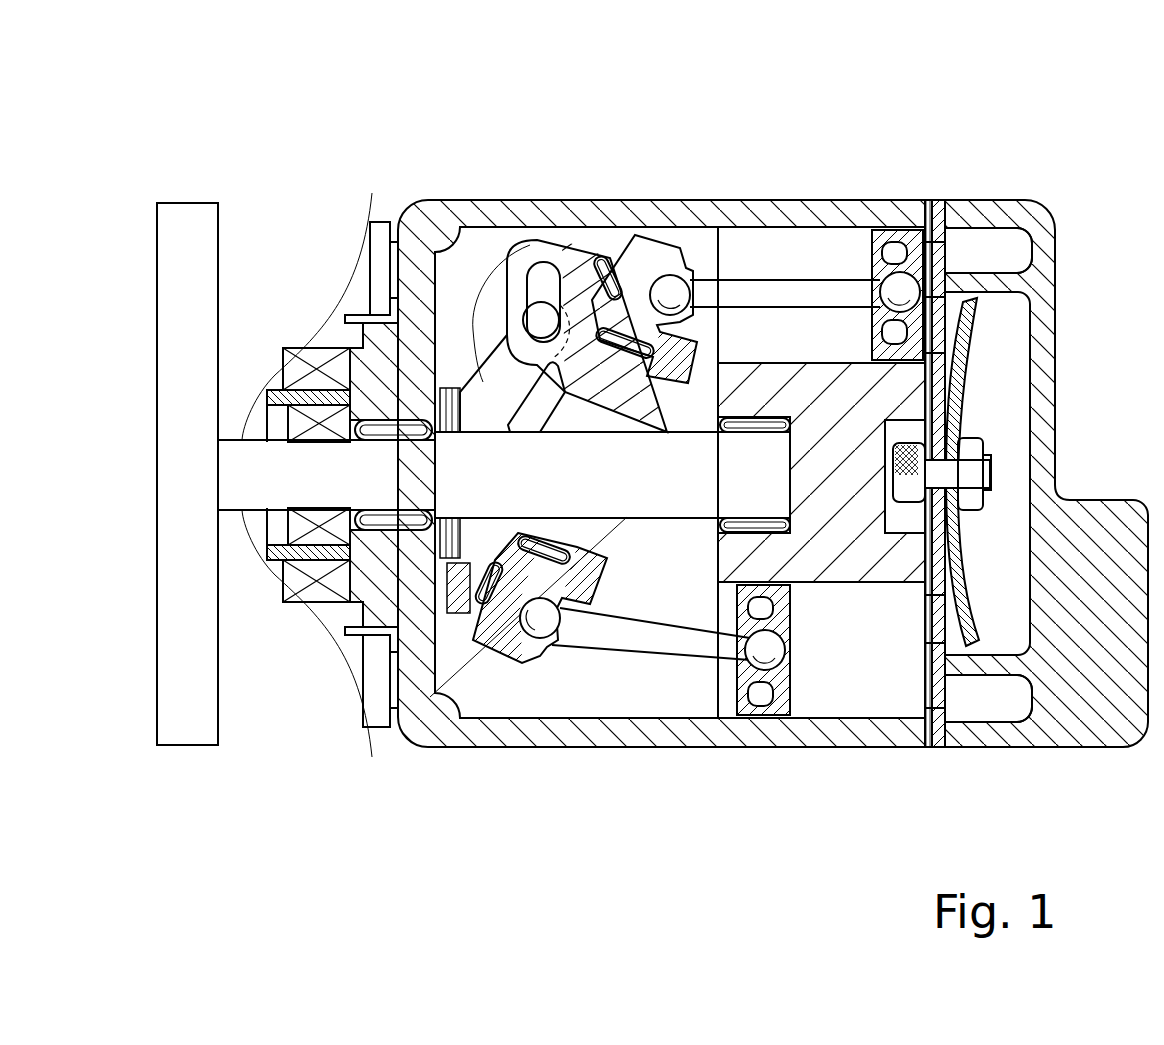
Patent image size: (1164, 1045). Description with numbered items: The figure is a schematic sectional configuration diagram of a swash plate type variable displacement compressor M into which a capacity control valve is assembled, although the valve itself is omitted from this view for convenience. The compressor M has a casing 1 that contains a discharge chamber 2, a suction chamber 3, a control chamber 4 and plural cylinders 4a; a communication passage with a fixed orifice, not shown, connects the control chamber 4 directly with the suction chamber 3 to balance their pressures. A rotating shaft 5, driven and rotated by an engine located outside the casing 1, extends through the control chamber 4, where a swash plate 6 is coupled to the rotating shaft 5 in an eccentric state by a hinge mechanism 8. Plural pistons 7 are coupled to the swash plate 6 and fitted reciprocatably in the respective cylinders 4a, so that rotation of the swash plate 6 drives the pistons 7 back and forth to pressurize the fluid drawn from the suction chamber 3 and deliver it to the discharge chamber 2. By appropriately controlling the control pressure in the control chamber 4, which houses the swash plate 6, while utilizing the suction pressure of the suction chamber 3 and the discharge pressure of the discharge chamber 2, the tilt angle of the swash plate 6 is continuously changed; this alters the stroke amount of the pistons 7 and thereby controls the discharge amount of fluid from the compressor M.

The variable displacement compressor M is at (1034, 120).
The casing 1 is at (442, 182).
The discharge chamber 2 is at (1005, 395).
The suction chamber 3 is at (1015, 250).
The control chamber 4 is at (640, 695).
The cylinders 4a is at (800, 245).
The rotating shaft 5 is at (467, 483).
The swash plate 6 is at (637, 330).
The pistons 7 is at (903, 240).
The hinge mechanism 8 is at (482, 384).